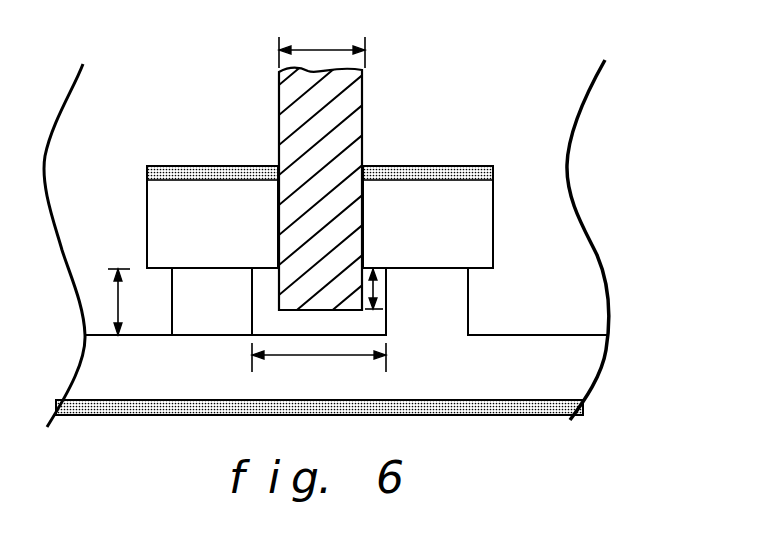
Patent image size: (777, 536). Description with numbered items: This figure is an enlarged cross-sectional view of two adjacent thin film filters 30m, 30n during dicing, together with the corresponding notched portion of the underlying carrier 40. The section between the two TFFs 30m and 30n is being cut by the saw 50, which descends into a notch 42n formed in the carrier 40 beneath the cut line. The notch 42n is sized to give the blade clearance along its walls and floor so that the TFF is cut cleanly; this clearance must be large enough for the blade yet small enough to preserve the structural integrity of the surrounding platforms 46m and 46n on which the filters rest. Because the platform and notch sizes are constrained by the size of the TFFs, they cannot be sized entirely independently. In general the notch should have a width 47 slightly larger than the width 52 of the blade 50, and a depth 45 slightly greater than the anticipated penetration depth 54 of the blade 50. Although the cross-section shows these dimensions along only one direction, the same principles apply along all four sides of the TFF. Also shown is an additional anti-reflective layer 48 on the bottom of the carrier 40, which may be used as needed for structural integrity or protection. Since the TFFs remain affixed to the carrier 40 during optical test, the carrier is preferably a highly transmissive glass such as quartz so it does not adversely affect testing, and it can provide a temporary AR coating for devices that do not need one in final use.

The thin film filter 30m is at (188, 166).
The thin film filter 30n is at (415, 166).
The carrier 40 is at (553, 365).
The notch 42n is at (352, 322).
The depth 45 is at (146, 337).
The platform 46m is at (233, 322).
The platform 46n is at (462, 322).
The width 47 is at (300, 375).
The AR layer 48 is at (585, 408).
The saw 50 is at (364, 97).
The width 52 is at (327, 47).
The penetration depth 54 is at (386, 290).